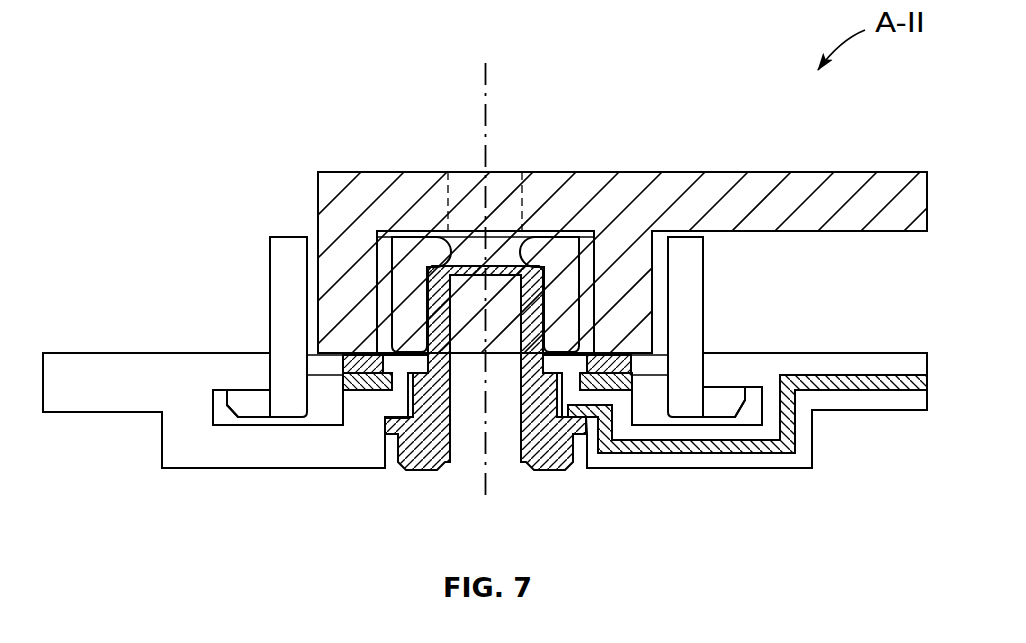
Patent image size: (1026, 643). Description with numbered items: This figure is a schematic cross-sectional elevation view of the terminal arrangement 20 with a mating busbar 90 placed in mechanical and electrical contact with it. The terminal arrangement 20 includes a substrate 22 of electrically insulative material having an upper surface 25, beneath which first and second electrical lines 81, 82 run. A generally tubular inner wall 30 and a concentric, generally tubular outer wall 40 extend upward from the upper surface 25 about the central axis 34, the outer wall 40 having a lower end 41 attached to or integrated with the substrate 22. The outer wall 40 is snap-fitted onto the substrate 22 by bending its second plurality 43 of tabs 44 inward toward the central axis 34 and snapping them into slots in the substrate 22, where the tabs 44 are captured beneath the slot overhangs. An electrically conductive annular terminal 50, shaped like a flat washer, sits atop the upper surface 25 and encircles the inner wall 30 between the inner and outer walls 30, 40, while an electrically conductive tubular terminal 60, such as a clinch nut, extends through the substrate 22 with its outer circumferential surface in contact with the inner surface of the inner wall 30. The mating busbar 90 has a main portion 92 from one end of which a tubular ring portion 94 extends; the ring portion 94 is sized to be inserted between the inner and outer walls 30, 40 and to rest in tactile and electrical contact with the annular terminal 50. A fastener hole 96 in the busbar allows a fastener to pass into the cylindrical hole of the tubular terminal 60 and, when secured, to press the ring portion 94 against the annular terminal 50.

The terminal arrangement 20 is at (153, 76).
The substrate 22 is at (89, 371).
The upper surface 25 is at (160, 353).
The inner wall 30 is at (415, 250).
The central axis 34 is at (488, 118).
The outer wall 40 is at (280, 252).
The lower end 41 is at (685, 397).
The second plurality of tabs 43 is at (124, 550).
The tab 44 is at (258, 405).
The annular terminal 50 is at (343, 362).
The tubular terminal 60 is at (549, 471).
The first electrical line 81 is at (358, 378).
The second electrical line 82 is at (823, 376).
The mating busbar 90 is at (335, 187).
The main portion 92 is at (770, 183).
The ring portion 94 is at (333, 265).
The fastener hole 96 is at (456, 137).